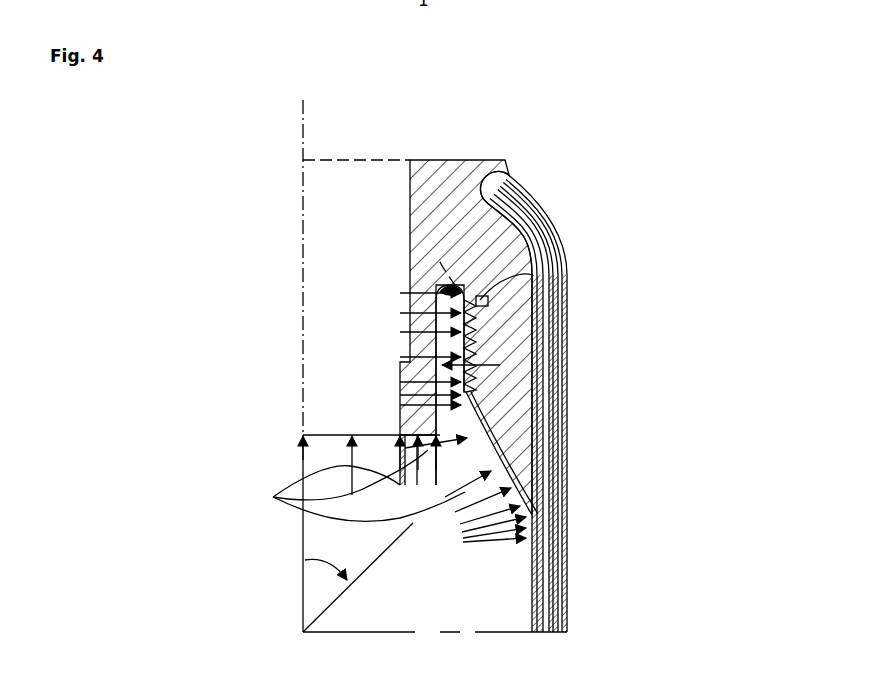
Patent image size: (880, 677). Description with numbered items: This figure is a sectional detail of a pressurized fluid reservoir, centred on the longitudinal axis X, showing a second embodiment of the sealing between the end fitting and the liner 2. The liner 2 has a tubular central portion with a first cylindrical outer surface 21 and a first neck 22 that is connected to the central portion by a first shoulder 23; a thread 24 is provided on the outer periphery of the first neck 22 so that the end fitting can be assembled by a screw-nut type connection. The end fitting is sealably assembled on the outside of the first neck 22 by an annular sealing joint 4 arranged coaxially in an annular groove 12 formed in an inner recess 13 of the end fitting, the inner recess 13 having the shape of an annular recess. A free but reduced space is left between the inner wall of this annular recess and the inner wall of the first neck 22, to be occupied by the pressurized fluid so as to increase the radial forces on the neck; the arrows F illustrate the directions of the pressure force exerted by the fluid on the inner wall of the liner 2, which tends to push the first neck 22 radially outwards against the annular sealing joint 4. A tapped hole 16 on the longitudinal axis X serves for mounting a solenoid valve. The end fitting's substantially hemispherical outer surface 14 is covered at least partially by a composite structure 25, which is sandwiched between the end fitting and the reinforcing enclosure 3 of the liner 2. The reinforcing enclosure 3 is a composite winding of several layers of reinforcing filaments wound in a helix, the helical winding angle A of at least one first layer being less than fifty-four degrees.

The liner 2 is at (395, 583).
The reinforcing enclosure 3 is at (553, 537).
The annular sealing joint 4 is at (482, 311).
The annular groove 12 is at (478, 280).
The inner recess 13 is at (440, 262).
The substantially hemispherical outer surface 14 is at (533, 200).
The tapped hole 16 is at (350, 325).
The first cylindrical outer surface 21 is at (538, 598).
The first neck 22 is at (532, 348).
The first shoulder 23 is at (535, 473).
The thread 24 is at (532, 388).
The composite structure 25 is at (540, 423).
The longitudinal axis X is at (303, 134).
The arrows F is at (359, 485).
The helical winding angle A is at (312, 592).